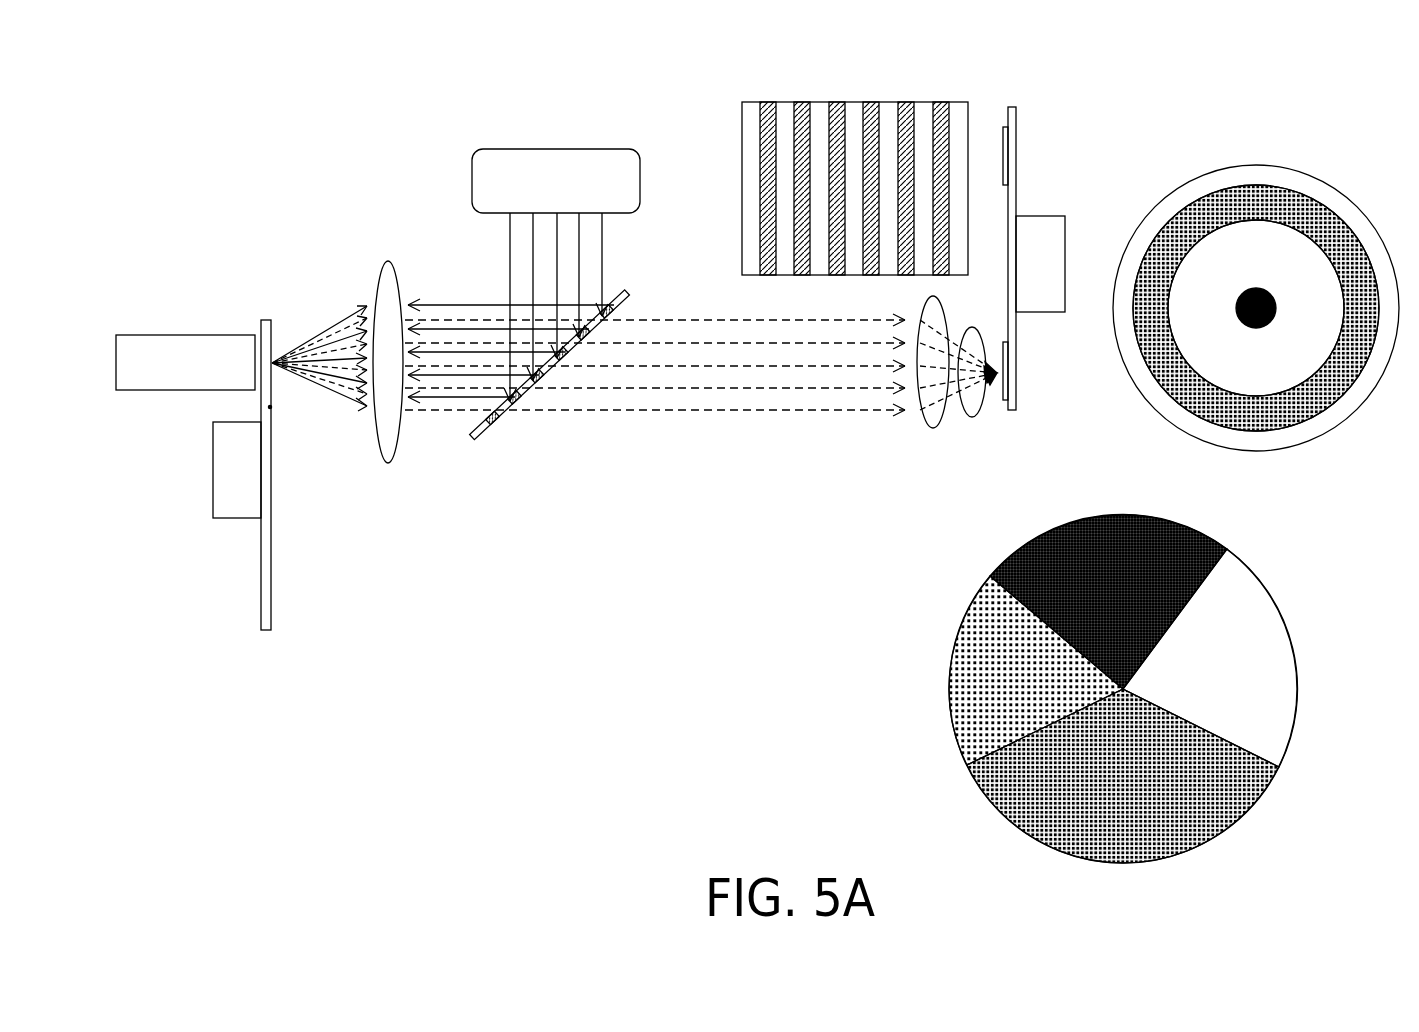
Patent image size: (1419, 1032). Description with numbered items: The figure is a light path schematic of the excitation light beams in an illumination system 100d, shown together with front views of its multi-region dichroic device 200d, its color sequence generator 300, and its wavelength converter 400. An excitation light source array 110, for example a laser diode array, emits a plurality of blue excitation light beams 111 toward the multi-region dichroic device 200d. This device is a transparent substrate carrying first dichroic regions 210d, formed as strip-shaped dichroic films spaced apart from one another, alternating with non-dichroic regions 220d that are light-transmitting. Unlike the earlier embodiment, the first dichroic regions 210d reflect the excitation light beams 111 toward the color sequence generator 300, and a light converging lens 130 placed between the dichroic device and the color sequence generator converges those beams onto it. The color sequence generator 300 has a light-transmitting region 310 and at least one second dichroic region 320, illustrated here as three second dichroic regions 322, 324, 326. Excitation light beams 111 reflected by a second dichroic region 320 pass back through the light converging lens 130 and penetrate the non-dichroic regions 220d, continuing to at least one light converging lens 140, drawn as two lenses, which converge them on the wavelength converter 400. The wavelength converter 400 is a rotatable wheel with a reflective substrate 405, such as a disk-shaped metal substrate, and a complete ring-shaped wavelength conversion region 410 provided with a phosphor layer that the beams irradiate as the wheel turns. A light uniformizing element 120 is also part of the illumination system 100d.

The illumination system 100d is at (888, 737).
The excitation light source array 110 is at (641, 176).
The excitation light beams 111 is at (533, 253).
The light uniformizing element 120 is at (182, 382).
The light converging lens 130 is at (388, 456).
The light converging lens 140 is at (968, 406).
The multi-region dichroic device 200d is at (719, 264).
The first dichroic regions 210d is at (550, 365).
The non-dichroic regions 220d is at (497, 467).
The color sequence generator 300 is at (262, 579).
The light-transmitting region 310 is at (990, 607).
The second dichroic region 320 is at (1178, 673).
The second dichroic region 322 is at (1085, 540).
The second dichroic region 324 is at (1270, 626).
The second dichroic region 326 is at (1256, 790).
The wavelength converter 400 is at (1037, 121).
The reflective substrate 405 is at (1018, 174).
The wavelength conversion region 410 is at (1005, 127).